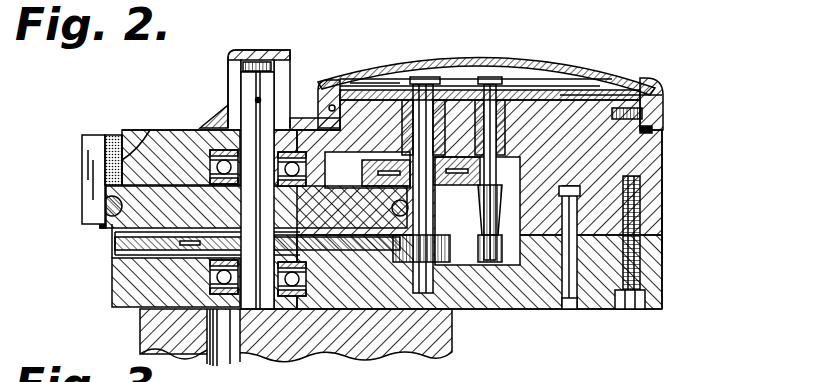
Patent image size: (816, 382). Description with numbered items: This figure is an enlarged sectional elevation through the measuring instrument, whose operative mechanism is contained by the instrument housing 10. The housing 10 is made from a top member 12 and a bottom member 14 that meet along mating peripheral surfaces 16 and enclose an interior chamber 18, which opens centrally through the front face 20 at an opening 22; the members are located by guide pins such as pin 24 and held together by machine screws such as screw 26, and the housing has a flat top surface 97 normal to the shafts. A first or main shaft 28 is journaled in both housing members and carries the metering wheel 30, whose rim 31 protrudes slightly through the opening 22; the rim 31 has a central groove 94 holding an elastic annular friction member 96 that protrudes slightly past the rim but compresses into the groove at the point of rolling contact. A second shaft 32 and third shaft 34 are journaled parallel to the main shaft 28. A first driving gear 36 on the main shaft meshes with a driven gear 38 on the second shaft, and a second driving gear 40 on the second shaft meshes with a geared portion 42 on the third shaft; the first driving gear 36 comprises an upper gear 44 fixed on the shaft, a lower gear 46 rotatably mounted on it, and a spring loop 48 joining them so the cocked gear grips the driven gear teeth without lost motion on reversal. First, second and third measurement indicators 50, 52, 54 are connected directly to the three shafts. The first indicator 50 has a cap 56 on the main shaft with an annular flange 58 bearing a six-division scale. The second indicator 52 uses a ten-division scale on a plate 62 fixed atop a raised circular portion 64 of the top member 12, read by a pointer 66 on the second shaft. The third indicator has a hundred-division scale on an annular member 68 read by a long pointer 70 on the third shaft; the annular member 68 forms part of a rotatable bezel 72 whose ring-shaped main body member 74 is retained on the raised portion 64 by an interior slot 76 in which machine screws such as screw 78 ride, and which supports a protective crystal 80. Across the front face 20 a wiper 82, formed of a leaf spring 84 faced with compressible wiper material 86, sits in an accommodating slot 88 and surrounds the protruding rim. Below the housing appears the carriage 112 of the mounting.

The instrument housing 10 is at (670, 168).
The top member 12 is at (596, 151).
The bottom member 14 is at (609, 266).
The mating peripheral surfaces 16 is at (664, 222).
The interior chamber 18 is at (472, 258).
The front face 20 is at (112, 294).
The opening 22 is at (106, 232).
The guide pin 24 is at (567, 290).
The machine screw 26 is at (630, 310).
The first or main shaft 28 is at (244, 151).
The metering wheel 30 is at (197, 216).
The rim 31 is at (100, 190).
The second shaft 32 is at (434, 198).
The third shaft 34 is at (484, 238).
The first driving gear 36 is at (348, 262).
The driven gear 38 is at (400, 262).
The second driving gear 40 is at (362, 178).
The geared portion 42 is at (500, 172).
The upper half or gear 44 is at (118, 243).
The lower half or gear 46 is at (118, 256).
The spring loop 48 is at (167, 282).
The first measurement indicator 50 is at (228, 72).
The second measurement indicator 52 is at (448, 82).
The third measurement indicator 54 is at (600, 86).
The cap 56 is at (258, 60).
The annular flange 58 is at (222, 120).
The plate 62 is at (532, 80).
The raised circular portion 64 is at (654, 130).
The pointer 66 is at (422, 77).
The annular member 68 is at (346, 90).
The pointer 70 is at (392, 78).
The rotatable bezel 72 is at (660, 80).
The main body member 74 is at (664, 96).
The interior slot 76 is at (330, 102).
The machine screw 78 is at (664, 116).
The crystal 80 is at (498, 62).
The wiper 82 is at (82, 150).
The leaf spring 84 is at (120, 134).
The compressible wiper material 86 is at (108, 138).
The accommodating slot 88 is at (128, 138).
The central groove 94 is at (132, 216).
The elastic annular friction member 96 is at (102, 208).
The flat top surface 97 is at (150, 128).
The carriage 112 is at (386, 322).